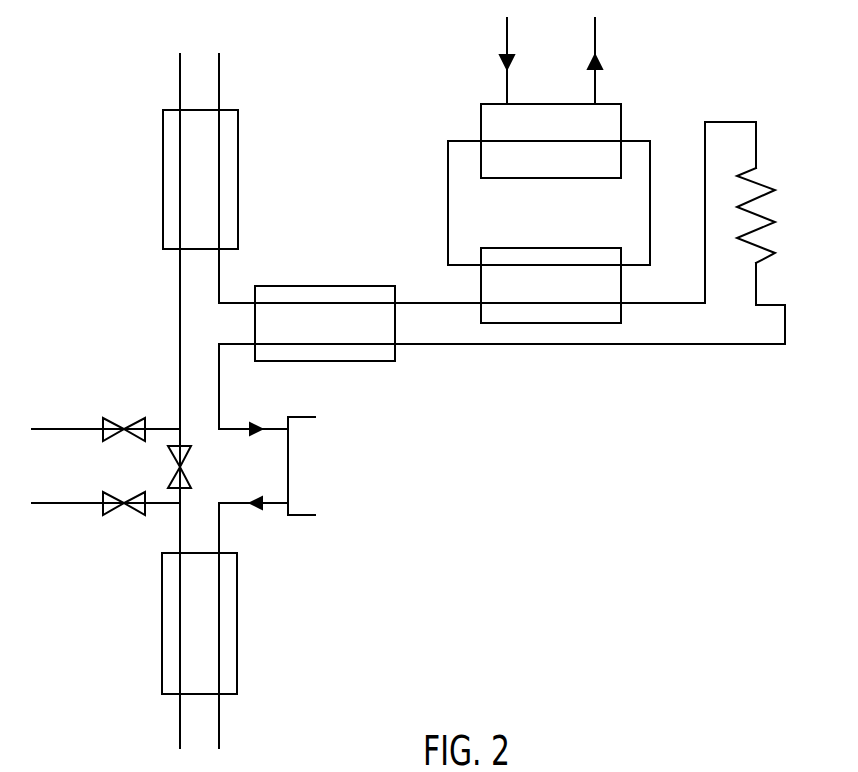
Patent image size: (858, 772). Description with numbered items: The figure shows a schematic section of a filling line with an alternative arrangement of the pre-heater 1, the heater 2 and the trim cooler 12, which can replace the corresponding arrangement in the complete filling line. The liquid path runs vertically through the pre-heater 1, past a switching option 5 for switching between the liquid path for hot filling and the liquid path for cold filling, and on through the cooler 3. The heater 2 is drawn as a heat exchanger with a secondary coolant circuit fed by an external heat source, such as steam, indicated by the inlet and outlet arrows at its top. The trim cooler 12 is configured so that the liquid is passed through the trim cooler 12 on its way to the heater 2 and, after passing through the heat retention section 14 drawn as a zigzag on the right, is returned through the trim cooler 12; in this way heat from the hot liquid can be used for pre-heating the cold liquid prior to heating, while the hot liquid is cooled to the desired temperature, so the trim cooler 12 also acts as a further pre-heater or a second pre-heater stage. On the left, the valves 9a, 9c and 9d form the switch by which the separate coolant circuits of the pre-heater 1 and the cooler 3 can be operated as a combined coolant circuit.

The pre-heater 1 is at (238, 132).
The heater 2 is at (621, 282).
The cooler 3 is at (237, 576).
The switching option 5 is at (316, 488).
The valve 9a is at (124, 427).
The valve 9c is at (124, 505).
The valve 9d is at (183, 467).
The trim cooler 12 is at (383, 286).
The heat retention section 14 is at (776, 215).